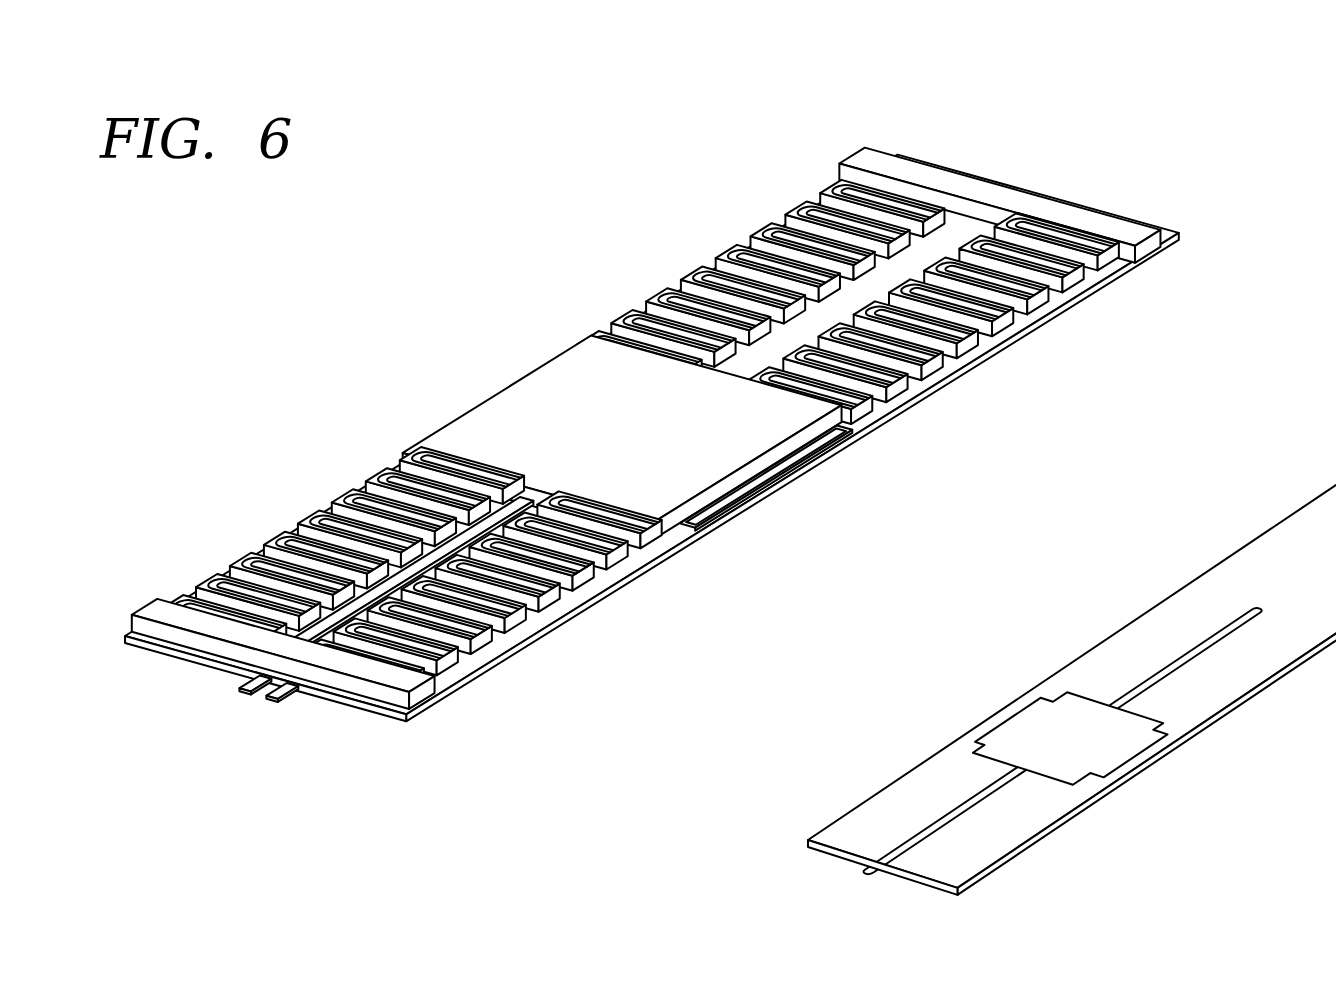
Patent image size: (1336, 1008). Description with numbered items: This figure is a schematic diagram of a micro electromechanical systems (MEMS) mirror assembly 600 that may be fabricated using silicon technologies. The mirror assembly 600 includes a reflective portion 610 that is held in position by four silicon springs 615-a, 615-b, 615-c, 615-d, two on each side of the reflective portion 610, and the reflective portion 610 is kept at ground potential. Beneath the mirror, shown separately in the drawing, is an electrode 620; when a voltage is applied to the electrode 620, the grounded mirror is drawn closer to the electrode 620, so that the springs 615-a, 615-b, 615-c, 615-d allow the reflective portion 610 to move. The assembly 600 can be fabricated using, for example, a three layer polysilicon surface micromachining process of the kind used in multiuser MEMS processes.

The mirror assembly 600 is at (640, 431).
The reflective portion 610 is at (540, 405).
The silicon spring 615-a is at (215, 579).
The silicon spring 615-b is at (778, 268).
The silicon spring 615-c is at (985, 322).
The silicon spring 615-d is at (487, 638).
The electrode 620 is at (1037, 733).